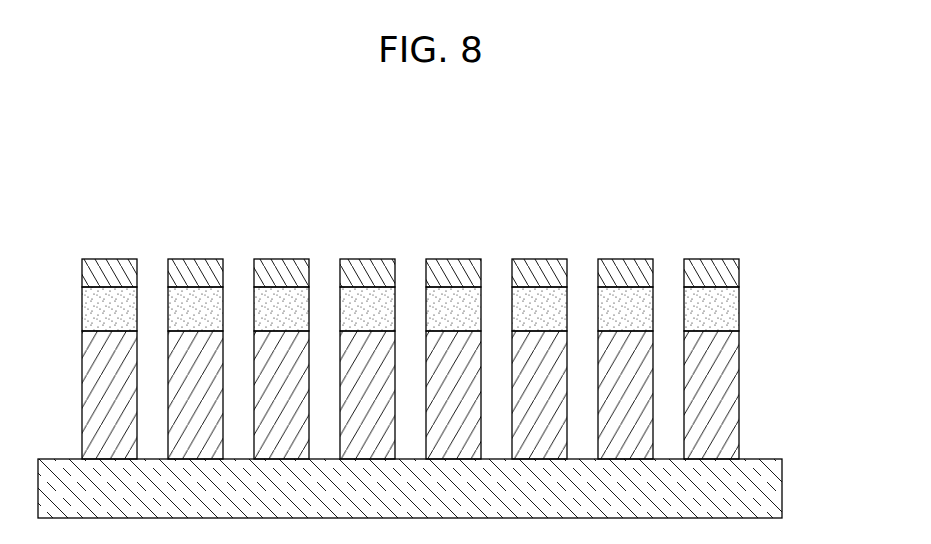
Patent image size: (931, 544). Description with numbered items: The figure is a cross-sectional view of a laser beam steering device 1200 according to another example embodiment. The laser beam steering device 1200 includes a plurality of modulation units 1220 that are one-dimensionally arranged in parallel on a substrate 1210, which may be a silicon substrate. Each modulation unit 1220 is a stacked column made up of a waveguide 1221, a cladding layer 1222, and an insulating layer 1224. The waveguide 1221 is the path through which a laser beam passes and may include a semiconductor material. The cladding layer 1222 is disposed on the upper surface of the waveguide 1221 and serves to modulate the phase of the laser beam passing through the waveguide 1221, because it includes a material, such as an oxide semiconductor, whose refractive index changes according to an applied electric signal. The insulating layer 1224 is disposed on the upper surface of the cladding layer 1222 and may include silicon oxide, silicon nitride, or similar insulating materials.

The laser beam steering device 1200 is at (770, 218).
The substrate 1210 is at (782, 486).
The modulation unit 1220 is at (110, 251).
The waveguide 1221 is at (739, 390).
The cladding layer 1222 is at (739, 306).
The insulating layer 1224 is at (739, 270).